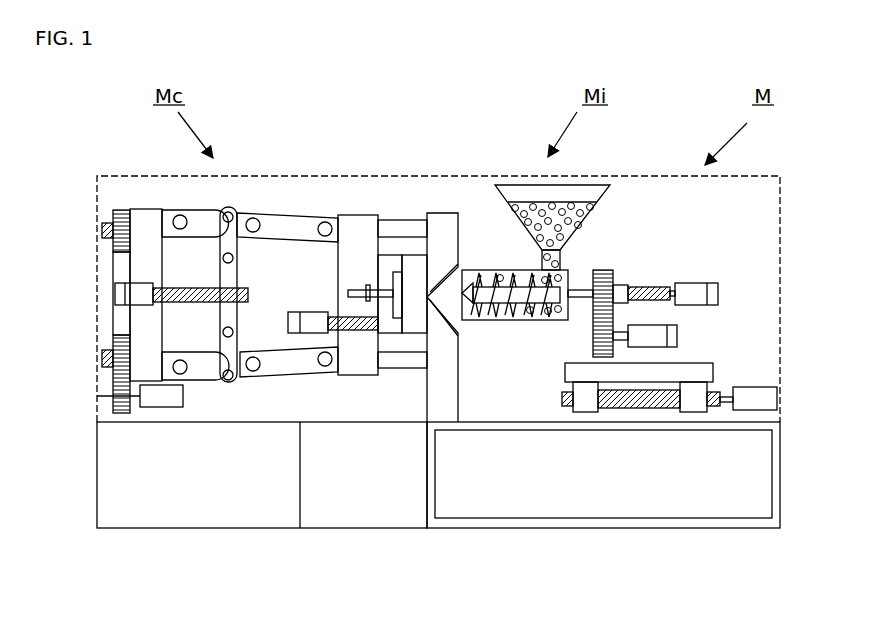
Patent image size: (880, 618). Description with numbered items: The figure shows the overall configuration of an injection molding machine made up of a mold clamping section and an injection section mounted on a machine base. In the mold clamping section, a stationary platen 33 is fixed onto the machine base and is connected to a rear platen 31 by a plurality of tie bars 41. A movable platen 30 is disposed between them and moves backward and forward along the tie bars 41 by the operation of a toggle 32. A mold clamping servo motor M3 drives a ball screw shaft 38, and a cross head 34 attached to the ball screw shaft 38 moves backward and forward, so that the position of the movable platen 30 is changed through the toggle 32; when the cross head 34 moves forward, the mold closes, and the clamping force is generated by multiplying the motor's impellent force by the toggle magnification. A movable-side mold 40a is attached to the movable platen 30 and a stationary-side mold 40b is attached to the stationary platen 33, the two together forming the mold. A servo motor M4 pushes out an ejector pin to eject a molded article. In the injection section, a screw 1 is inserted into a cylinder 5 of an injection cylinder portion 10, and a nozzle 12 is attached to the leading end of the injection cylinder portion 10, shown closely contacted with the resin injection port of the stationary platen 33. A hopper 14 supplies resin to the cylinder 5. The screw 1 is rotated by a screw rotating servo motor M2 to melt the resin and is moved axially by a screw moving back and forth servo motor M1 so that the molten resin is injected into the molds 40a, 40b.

The screw 1 is at (464, 320).
The cylinder 5 is at (532, 320).
The injection cylinder portion 10 is at (445, 267).
The nozzle 12 is at (440, 278).
The hopper 14 is at (580, 183).
The movable platen 30 is at (357, 213).
The rear platen 31 is at (143, 207).
The toggle 32 is at (295, 217).
The stationary platen 33 is at (437, 212).
The cross head 34 is at (250, 362).
The ball screw shaft 38 is at (183, 302).
The movable-side mold 40a is at (397, 333).
The stationary-side mold 40b is at (412, 335).
The tie bars 41 is at (412, 220).
The screw moving back and forth servo motor M1 is at (713, 282).
The screw rotating servo motor M2 is at (678, 342).
The mold clamping servo motor M3 is at (115, 298).
The servo motor M4 is at (308, 333).